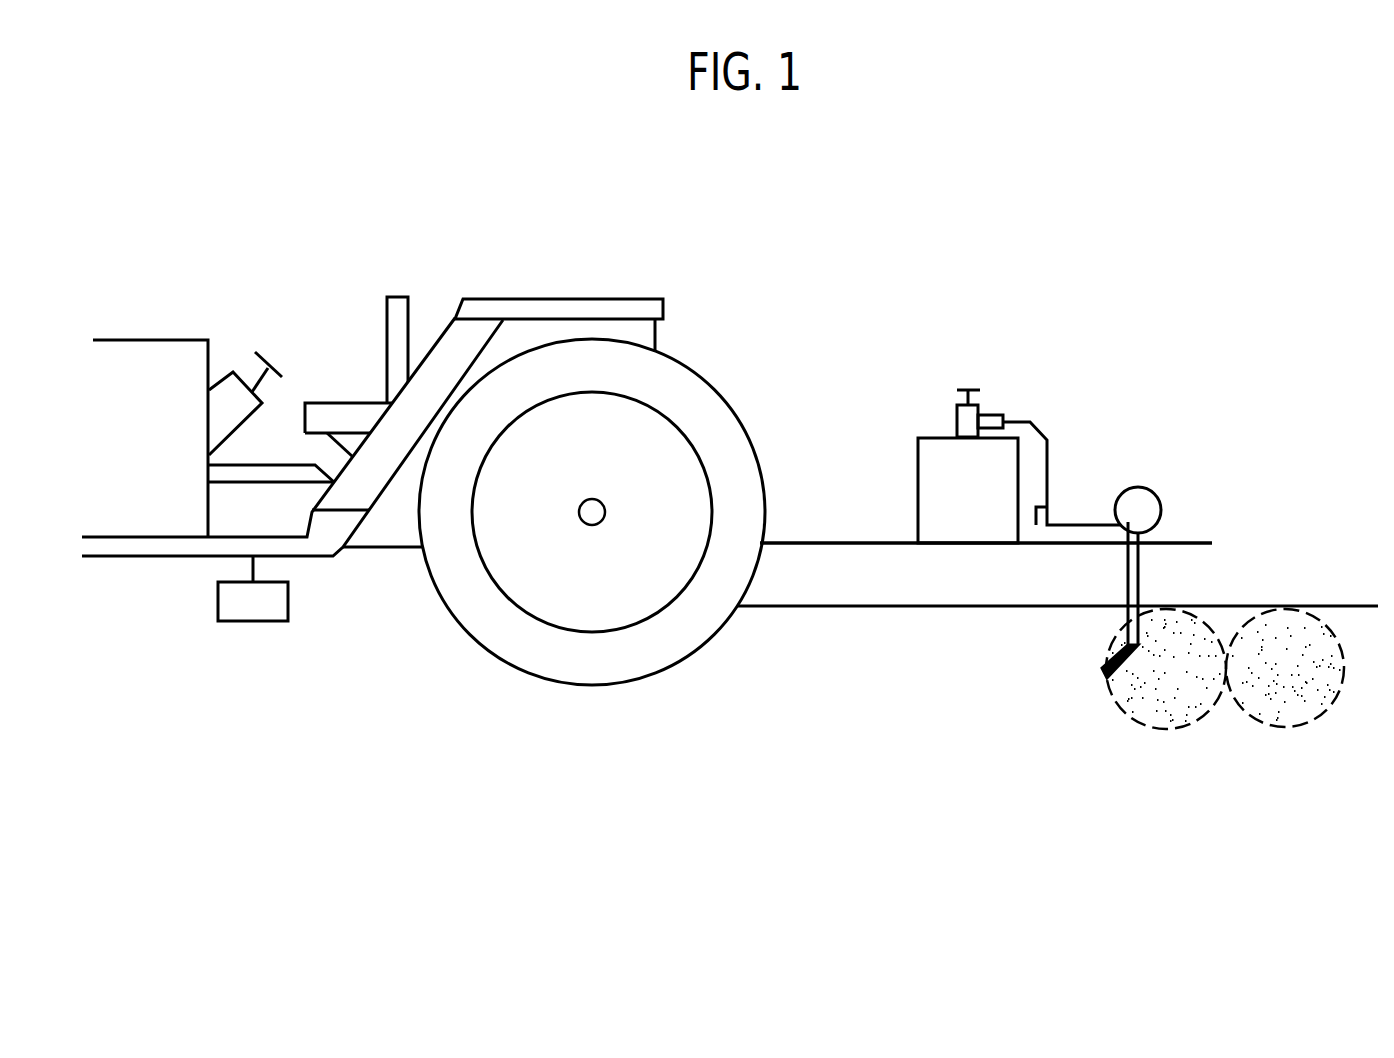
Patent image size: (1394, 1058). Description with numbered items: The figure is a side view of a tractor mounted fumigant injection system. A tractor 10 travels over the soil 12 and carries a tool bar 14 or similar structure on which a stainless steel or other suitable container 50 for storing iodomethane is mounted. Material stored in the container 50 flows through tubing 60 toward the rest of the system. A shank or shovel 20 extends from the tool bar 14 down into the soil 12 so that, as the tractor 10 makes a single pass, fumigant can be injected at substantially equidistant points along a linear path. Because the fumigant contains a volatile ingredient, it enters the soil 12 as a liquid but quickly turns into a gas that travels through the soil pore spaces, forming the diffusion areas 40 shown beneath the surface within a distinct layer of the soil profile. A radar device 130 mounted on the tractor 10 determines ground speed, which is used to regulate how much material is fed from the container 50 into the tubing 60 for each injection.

The tractor 10 is at (520, 246).
The soil 12 is at (958, 670).
The tool bar 14 is at (810, 542).
The shank or shovel 20 is at (1139, 568).
The diffusion areas 40 is at (1163, 730).
The container 50 is at (920, 452).
The tubing 60 is at (1007, 418).
The radar device 130 is at (247, 621).